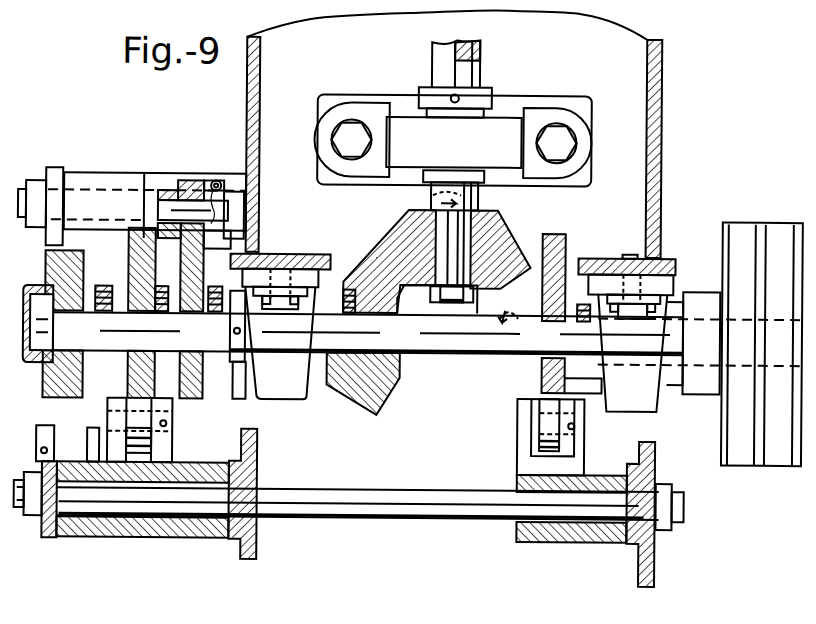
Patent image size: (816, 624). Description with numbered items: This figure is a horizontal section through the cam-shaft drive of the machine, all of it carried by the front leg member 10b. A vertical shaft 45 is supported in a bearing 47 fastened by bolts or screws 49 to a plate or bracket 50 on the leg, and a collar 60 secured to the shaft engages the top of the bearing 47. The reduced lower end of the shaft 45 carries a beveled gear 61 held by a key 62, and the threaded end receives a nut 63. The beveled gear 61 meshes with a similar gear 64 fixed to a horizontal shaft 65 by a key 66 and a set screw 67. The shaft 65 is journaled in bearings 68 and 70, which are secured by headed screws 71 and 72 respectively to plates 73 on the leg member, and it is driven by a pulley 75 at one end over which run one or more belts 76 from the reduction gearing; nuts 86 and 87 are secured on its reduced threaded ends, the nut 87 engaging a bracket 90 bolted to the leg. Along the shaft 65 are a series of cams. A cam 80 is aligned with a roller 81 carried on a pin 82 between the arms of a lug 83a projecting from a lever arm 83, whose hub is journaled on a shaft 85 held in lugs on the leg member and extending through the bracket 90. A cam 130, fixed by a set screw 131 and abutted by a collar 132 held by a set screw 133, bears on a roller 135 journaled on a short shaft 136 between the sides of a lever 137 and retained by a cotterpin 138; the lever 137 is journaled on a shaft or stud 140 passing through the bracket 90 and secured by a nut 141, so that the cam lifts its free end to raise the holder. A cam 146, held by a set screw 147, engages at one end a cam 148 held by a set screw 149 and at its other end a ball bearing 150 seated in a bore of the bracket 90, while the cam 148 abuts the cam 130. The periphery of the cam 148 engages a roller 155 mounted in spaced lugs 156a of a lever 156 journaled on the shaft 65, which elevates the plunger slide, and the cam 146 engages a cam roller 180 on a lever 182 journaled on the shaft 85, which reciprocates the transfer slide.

The front leg member 10b is at (258, 70).
The shaft 45 is at (478, 55).
The bearing 47 is at (405, 120).
The bolts or screws 49 is at (340, 140).
The plate or bracket 50 is at (620, 92).
The collar 60 is at (488, 90).
The beveled gear 61 is at (500, 250).
The key 62 is at (445, 222).
The nut 63 is at (473, 294).
The beveled gear 64 is at (400, 376).
The shaft 65 is at (483, 355).
The key 66 is at (397, 311).
The set screw 67 is at (348, 290).
The bearing 68 is at (650, 402).
The bearing 70 is at (295, 398).
The headed screws 71 is at (632, 317).
The headed screws 72 is at (281, 310).
The plates 73 is at (300, 262).
The pulley 75 is at (760, 222).
The belts 76 is at (785, 463).
The cam 80 is at (566, 240).
The roller 81 is at (575, 453).
The pin 82 is at (520, 428).
The lever arm 83 is at (583, 541).
The lug 83a is at (520, 450).
The shaft 85 is at (466, 520).
The nut 86 is at (665, 482).
The nut 87 is at (33, 518).
The bracket 90 is at (55, 170).
The cam 130 is at (246, 403).
The set screw 131 is at (214, 288).
The collar 132 is at (238, 363).
The set screw 133 is at (250, 333).
The roller 135 is at (190, 182).
The short shaft 136 is at (228, 209).
The lever 137 is at (243, 229).
The cotterpin 138 is at (217, 182).
The shaft or stud 140 is at (85, 183).
The nut 141 is at (30, 183).
The cam 146 is at (80, 266).
The set screw 147 is at (110, 281).
The cam 148 is at (128, 245).
The set screw 149 is at (163, 288).
The ball bearing 150 is at (38, 300).
The roller 155 is at (150, 408).
The lever 156 is at (205, 537).
The spaced lugs 156a is at (116, 404).
The cam roller 180 is at (48, 428).
The lever 182 is at (85, 533).